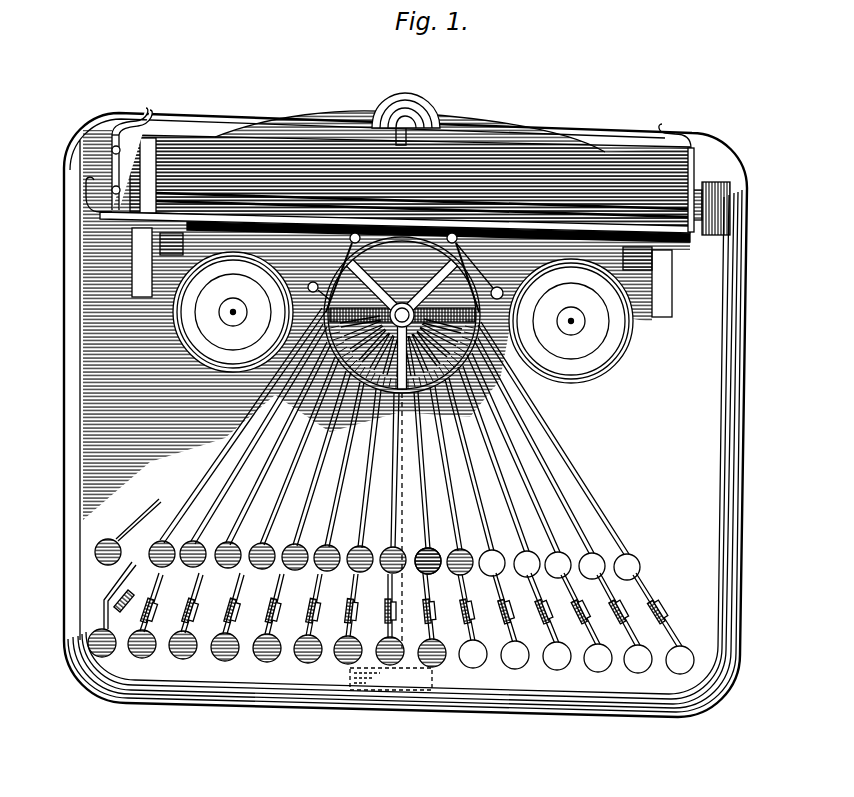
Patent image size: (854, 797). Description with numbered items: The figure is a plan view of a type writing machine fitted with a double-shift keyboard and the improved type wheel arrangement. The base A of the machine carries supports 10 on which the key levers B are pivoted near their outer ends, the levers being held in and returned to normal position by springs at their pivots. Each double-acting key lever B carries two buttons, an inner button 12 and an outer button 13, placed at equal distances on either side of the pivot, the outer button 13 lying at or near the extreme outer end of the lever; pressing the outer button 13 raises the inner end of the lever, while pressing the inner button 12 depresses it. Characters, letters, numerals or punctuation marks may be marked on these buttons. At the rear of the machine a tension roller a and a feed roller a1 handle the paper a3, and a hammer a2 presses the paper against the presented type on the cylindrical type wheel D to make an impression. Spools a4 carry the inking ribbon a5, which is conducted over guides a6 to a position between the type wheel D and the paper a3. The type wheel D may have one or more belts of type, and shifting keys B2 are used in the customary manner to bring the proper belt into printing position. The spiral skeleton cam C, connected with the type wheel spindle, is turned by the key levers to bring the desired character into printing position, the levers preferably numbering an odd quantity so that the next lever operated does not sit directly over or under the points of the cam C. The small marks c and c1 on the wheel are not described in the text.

The base A is at (405, 415).
The tension roller a is at (390, 212).
The feed roller a1 is at (625, 180).
The hammer a2 is at (380, 134).
The paper a3 is at (308, 286).
The spools a4 is at (403, 317).
The inking ribbon a5 is at (356, 234).
The guides a6 is at (456, 236).
The key levers B is at (205, 492).
The shifting keys B2 is at (128, 528).
The spiral skeleton cam C is at (402, 315).
The type c is at (436, 302).
The type c1 is at (422, 336).
The type wheel D is at (394, 396).
The supports 10 is at (160, 594).
The inner button 12 is at (430, 547).
The outer button 13 is at (350, 676).